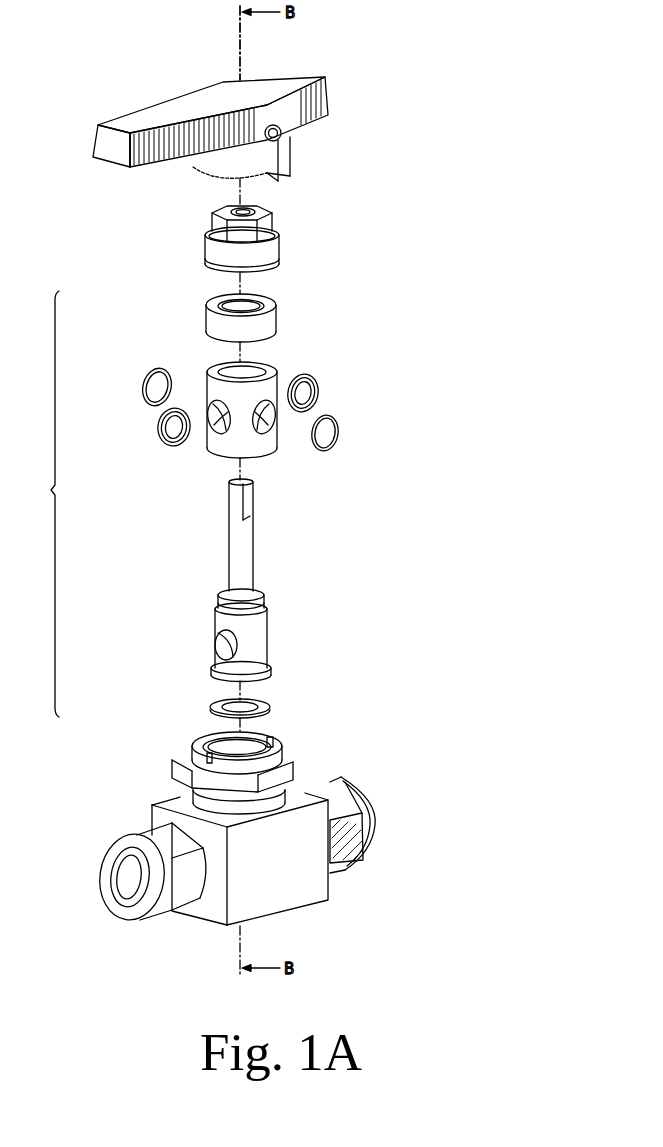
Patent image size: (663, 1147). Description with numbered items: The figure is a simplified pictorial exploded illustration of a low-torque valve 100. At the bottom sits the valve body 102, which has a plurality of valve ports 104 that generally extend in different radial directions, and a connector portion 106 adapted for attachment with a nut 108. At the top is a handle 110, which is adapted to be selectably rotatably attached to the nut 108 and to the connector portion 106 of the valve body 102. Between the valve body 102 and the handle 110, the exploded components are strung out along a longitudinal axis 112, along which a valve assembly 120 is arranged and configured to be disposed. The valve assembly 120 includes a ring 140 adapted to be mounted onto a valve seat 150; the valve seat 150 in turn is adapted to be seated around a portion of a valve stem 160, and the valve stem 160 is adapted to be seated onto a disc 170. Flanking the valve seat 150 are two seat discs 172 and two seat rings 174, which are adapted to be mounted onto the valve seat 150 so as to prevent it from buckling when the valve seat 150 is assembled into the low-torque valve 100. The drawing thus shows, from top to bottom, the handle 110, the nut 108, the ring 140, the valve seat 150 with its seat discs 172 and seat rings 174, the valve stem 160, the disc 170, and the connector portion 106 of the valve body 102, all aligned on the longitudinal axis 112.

The low-torque valve 100 is at (480, 489).
The valve body 102 is at (302, 896).
The valve ports 104 is at (148, 820).
The connector portion 106 is at (304, 780).
The nut 108 is at (278, 248).
The handle 110 is at (214, 162).
The longitudinal axis 112 is at (245, 43).
The valve assembly 120 is at (40, 504).
The ring 140 is at (276, 322).
The valve seat 150 is at (264, 447).
The valve stem 160 is at (256, 568).
The disc 170 is at (269, 713).
The seat discs 172 is at (153, 367).
The seat rings 174 is at (173, 447).